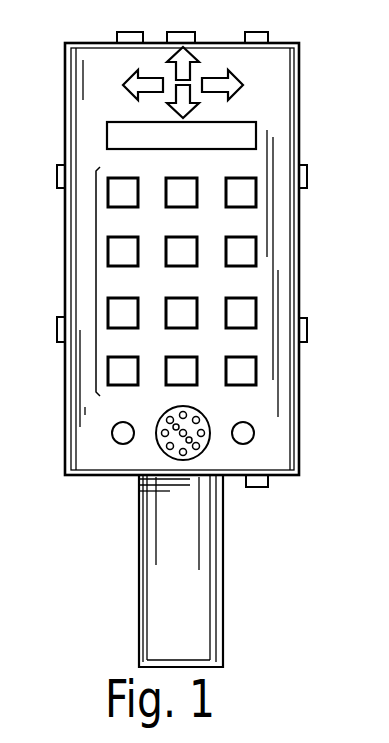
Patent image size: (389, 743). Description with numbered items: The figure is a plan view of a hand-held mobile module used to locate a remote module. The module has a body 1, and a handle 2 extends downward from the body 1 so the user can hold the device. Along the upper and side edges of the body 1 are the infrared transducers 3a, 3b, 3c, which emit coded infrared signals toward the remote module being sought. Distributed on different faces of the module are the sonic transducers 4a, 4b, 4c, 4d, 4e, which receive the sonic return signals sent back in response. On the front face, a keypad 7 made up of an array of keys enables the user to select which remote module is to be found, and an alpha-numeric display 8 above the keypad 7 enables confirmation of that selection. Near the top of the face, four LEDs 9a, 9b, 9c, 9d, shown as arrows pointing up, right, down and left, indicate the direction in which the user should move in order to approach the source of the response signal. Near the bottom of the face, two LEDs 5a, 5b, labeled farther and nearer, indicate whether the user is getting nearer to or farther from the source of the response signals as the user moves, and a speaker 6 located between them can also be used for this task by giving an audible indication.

The body 1 is at (300, 232).
The handle 2 is at (223, 623).
The infrared transducer 3a is at (170, 32).
The infrared transducer 3b is at (307, 182).
The infrared transducer 3c is at (57, 178).
The sonic transducer 4a is at (117, 32).
The sonic transducer 4b is at (258, 32).
The sonic transducer 4c is at (307, 322).
The sonic transducer 4d is at (258, 487).
The sonic transducer 4e is at (57, 335).
The LED 5a is at (112, 436).
The LED 5b is at (254, 434).
The speaker 6 is at (208, 418).
The keypad 7 is at (96, 282).
The alpha-numeric display 8 is at (107, 136).
The LED 9a is at (196, 59).
The LED 9b is at (240, 80).
The LED 9c is at (192, 110).
The LED 9d is at (123, 83).